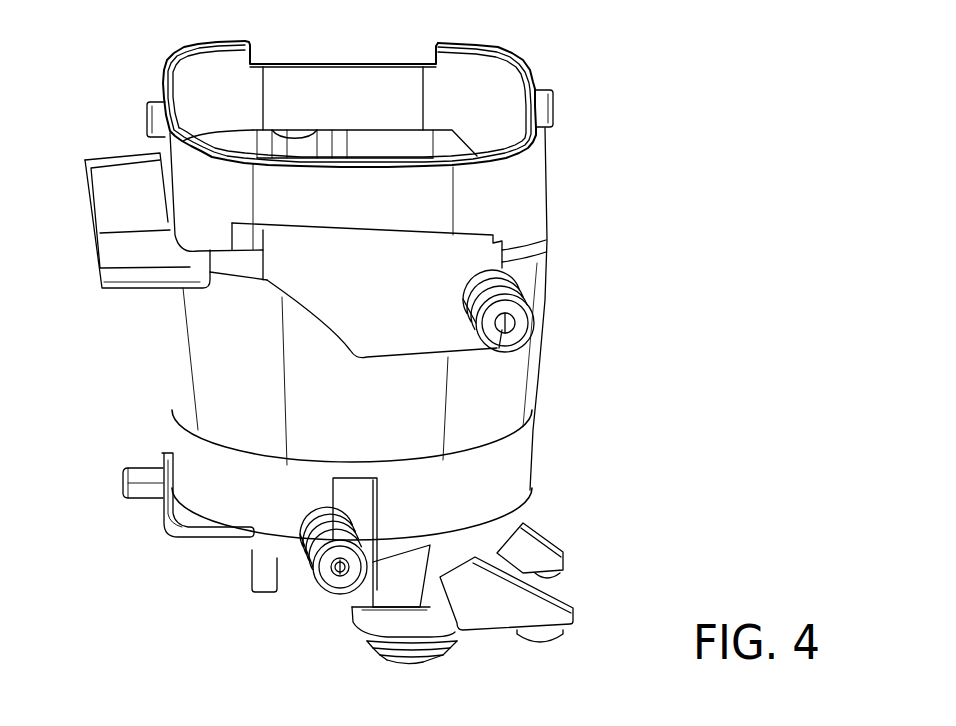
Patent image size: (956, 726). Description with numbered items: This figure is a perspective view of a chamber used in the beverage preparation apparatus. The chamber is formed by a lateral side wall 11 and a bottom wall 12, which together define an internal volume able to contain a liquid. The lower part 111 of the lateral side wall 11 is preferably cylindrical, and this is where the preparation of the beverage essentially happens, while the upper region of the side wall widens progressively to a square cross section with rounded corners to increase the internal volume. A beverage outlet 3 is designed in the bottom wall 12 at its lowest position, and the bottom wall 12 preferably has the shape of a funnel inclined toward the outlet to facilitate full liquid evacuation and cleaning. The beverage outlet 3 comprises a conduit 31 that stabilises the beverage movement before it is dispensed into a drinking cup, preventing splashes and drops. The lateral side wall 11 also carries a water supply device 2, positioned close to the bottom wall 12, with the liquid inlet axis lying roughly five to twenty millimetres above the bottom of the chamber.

The lateral side wall 11 is at (535, 373).
The lower part of the lateral side wall 111 is at (551, 414).
The water supply device 2 is at (318, 563).
The bottom wall 12 is at (380, 588).
The conduit 31 is at (383, 628).
The beverage outlet 3 is at (452, 669).